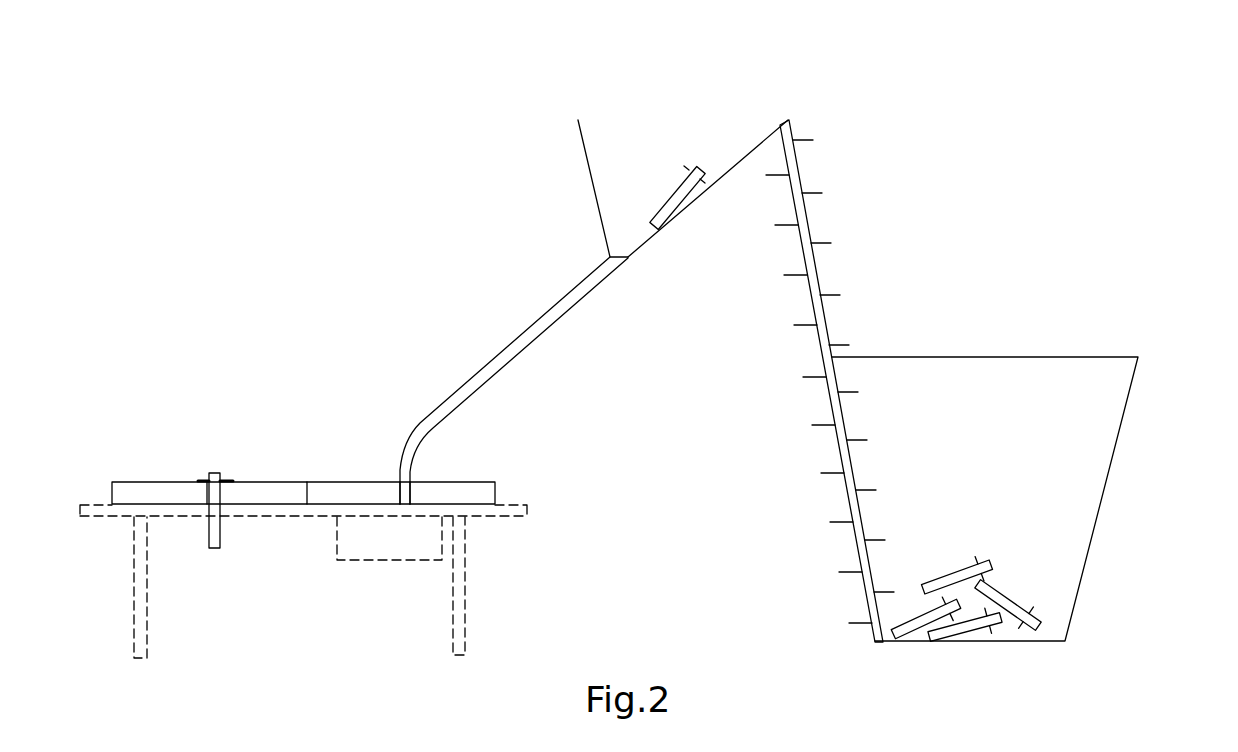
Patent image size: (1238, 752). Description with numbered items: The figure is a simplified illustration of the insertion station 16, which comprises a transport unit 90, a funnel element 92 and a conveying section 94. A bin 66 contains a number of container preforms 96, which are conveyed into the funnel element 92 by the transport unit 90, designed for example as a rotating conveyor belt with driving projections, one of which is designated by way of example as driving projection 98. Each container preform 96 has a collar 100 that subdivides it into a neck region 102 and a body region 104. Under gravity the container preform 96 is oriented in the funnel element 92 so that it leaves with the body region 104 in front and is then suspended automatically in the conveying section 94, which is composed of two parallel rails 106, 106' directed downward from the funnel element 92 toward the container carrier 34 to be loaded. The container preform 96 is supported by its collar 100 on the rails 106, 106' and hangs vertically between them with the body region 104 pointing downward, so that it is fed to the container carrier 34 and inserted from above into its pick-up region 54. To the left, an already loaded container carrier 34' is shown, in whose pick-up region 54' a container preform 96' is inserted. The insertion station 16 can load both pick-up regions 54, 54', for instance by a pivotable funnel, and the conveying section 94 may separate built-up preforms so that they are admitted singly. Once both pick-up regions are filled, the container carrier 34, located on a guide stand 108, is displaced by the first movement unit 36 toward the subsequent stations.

The insertion station 16 is at (703, 397).
The container carrier 34 is at (437, 469).
The already loaded container carrier 34' is at (172, 439).
The first movement unit 36 is at (389, 560).
The pick-up region 54 is at (381, 443).
The pick-up region 54' is at (179, 437).
The bin 66 is at (1113, 462).
The transport unit 90 is at (807, 218).
The funnel element 92 is at (590, 172).
The conveying section 94 is at (539, 380).
The container preform 96 is at (967, 525).
The container preform 96' is at (234, 469).
The driving projection 98 is at (835, 292).
The collar 100 is at (684, 165).
The neck region 102 is at (697, 167).
The body region 104 is at (658, 210).
The rail 106 is at (514, 380).
The rail 106' is at (544, 381).
The guide stand 108 is at (498, 515).